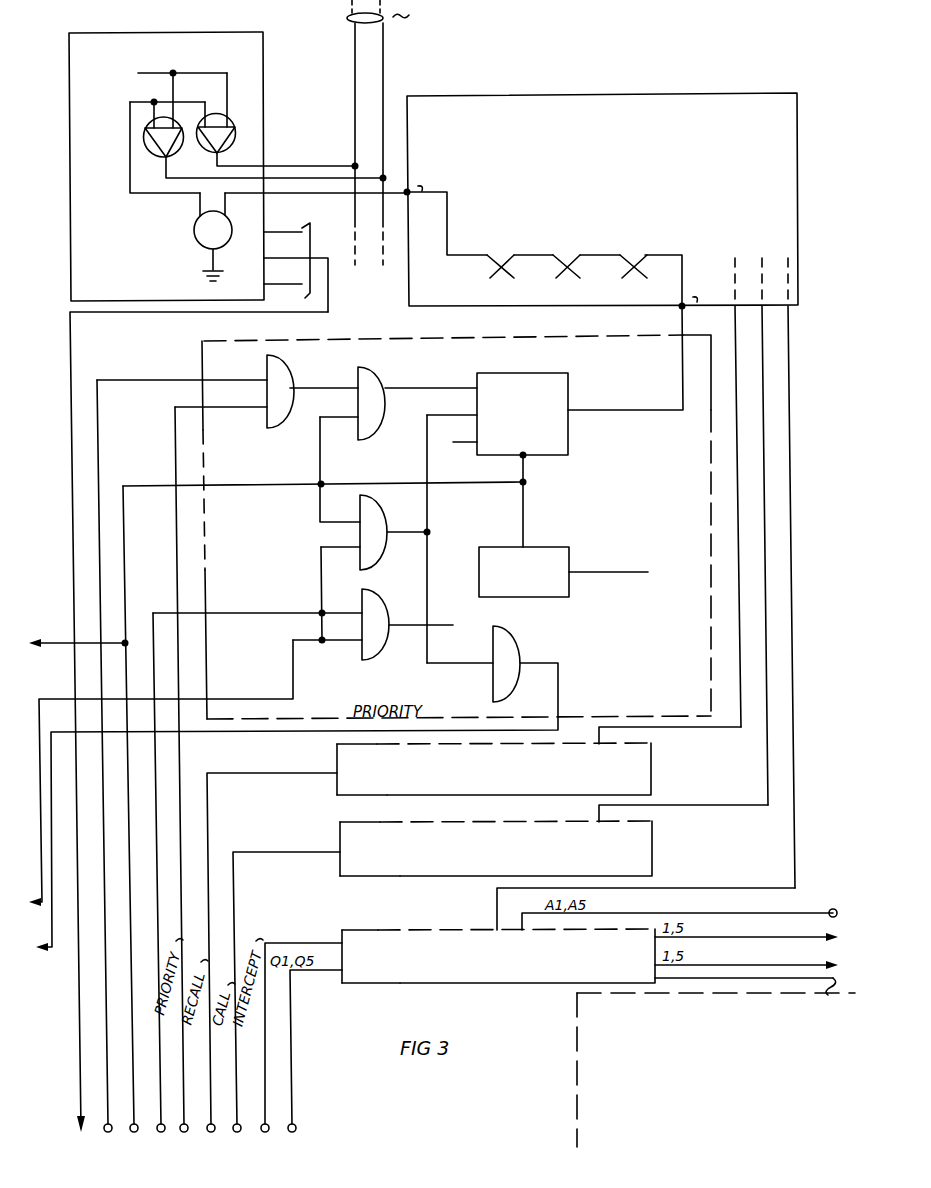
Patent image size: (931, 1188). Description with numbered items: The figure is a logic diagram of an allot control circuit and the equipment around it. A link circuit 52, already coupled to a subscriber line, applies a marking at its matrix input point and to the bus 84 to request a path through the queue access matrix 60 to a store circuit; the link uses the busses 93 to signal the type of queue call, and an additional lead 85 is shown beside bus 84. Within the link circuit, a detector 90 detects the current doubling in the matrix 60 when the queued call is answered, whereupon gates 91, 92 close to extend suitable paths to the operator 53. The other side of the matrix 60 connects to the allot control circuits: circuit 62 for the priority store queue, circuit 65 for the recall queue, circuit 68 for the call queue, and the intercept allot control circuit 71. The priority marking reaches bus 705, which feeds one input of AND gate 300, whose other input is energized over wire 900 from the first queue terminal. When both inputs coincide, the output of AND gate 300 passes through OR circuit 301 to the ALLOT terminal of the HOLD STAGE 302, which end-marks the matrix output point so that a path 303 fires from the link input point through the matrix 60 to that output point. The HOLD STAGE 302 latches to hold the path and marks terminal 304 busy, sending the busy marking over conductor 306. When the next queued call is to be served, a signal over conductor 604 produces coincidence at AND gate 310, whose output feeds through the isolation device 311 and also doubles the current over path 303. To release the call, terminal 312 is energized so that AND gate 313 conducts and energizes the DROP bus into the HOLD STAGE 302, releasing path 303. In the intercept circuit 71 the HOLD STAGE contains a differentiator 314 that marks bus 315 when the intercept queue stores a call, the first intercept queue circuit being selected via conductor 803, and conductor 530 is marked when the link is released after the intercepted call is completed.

The link circuit 52 is at (209, 29).
The operator 53 is at (506, 132).
The queue access matrix 60 is at (636, 150).
The allot control circuit 62 is at (675, 689).
The allot control circuit 65 is at (597, 784).
The allot control circuit 68 is at (591, 865).
The intercept allot control circuit 71 is at (494, 972).
The bus 84 is at (297, 258).
The line firing lead 85 is at (297, 232).
The detector 90 is at (159, 237).
The gate 91 is at (180, 149).
The gate 92 is at (234, 137).
The busses 93 is at (330, 300).
The AND gate 300 is at (290, 374).
The OR circuit 301 is at (386, 374).
The HOLD STAGE 302 is at (578, 396).
The path 303 is at (512, 260).
The terminal 304 is at (527, 486).
The conductor 306 is at (381, 477).
The AND gate 310 is at (387, 558).
The isolation device 311 is at (521, 645).
The terminal 312 is at (316, 648).
The AND gate 313 is at (368, 655).
The differentiator 314 is at (545, 544).
The bus 315 is at (714, 957).
The conductor 530 is at (716, 1062).
The conductor 604 is at (309, 568).
The bus 705 is at (173, 458).
The conductor 803 is at (296, 1120).
The wire 900 is at (110, 1110).